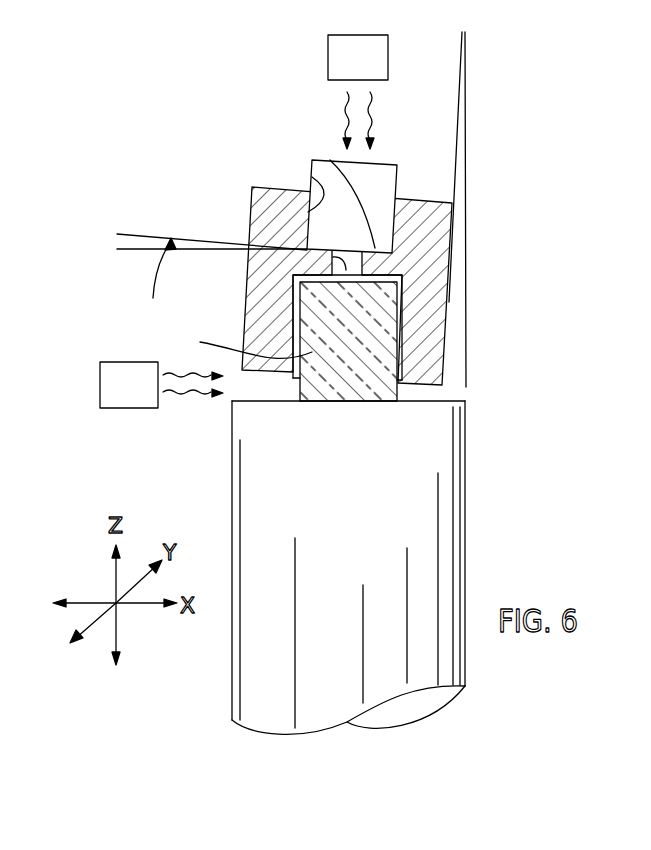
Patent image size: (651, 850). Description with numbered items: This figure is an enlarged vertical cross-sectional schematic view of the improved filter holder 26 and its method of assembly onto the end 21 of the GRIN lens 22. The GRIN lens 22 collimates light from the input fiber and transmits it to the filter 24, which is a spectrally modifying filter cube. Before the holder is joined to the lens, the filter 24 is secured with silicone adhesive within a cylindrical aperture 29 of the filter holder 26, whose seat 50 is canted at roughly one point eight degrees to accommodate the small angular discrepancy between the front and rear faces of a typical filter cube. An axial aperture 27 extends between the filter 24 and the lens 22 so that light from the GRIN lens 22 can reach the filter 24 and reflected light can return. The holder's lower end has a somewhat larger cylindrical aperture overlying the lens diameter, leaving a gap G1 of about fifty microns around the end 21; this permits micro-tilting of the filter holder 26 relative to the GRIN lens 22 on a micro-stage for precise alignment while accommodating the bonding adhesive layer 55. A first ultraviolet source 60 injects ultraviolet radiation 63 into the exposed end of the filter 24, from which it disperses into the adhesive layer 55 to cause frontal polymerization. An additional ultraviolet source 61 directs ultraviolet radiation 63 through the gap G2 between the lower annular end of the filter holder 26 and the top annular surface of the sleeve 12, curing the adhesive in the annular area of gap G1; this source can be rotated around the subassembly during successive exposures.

The sleeve 12 is at (465, 503).
The end of GRIN lens 21 is at (382, 318).
The GRIN lens 22 is at (400, 350).
The filter 24 is at (383, 157).
The filter holder 26 is at (460, 305).
The axial aperture 27 is at (330, 294).
The cylindrical aperture 29 is at (312, 177).
The seat 50 is at (330, 160).
The adhesive layer 55 is at (312, 350).
The ultraviolet source 60 is at (328, 45).
The ultraviolet source 61 is at (100, 383).
The ultraviolet radiation 63 is at (370, 93).
The gap G1 is at (398, 387).
The gap G2 is at (433, 393).